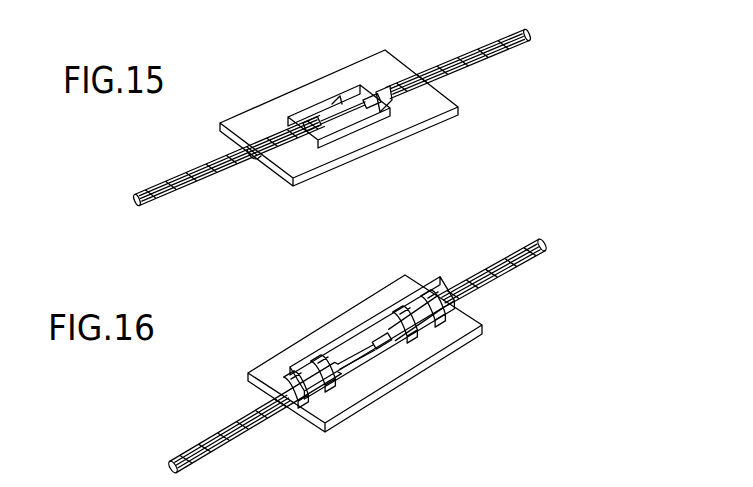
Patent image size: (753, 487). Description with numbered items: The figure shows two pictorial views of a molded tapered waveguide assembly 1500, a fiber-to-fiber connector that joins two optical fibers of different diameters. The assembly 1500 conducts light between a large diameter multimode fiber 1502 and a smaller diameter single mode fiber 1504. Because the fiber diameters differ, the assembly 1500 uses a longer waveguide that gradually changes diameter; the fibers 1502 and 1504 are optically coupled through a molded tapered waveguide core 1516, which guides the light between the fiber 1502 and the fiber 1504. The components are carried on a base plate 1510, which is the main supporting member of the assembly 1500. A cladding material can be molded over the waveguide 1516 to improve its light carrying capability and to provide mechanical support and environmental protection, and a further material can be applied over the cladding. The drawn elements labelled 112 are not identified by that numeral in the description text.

In FIG. 15, the molded tapered waveguide assembly 1500 is at (338, 49).
In FIG. 16, the molded tapered waveguide assembly 1500 is at (316, 296).
In FIG. 15, the large diameter multimode fiber 1502 is at (175, 196).
In FIG. 16, the large diameter multimode fiber 1502 is at (222, 427).
In FIG. 15, the smaller diameter single mode fiber 1504 is at (500, 62).
In FIG. 16, the smaller diameter single mode fiber 1504 is at (510, 277).
In FIG. 15, the base plate 1510 is at (432, 122).
In FIG. 16, the base plate 1510 is at (455, 345).
In FIG. 15, the molded tapered waveguide core 1516 is at (333, 125).
In FIG. 16, the molded tapered waveguide core 1516 is at (363, 360).
In FIG. 16, the clamps 112 is at (447, 283).